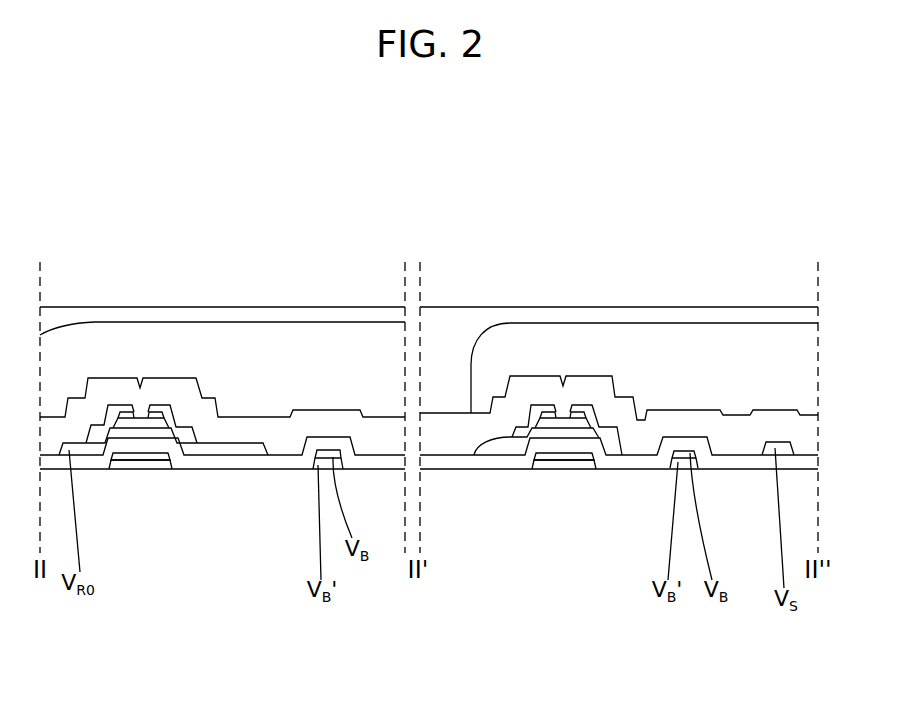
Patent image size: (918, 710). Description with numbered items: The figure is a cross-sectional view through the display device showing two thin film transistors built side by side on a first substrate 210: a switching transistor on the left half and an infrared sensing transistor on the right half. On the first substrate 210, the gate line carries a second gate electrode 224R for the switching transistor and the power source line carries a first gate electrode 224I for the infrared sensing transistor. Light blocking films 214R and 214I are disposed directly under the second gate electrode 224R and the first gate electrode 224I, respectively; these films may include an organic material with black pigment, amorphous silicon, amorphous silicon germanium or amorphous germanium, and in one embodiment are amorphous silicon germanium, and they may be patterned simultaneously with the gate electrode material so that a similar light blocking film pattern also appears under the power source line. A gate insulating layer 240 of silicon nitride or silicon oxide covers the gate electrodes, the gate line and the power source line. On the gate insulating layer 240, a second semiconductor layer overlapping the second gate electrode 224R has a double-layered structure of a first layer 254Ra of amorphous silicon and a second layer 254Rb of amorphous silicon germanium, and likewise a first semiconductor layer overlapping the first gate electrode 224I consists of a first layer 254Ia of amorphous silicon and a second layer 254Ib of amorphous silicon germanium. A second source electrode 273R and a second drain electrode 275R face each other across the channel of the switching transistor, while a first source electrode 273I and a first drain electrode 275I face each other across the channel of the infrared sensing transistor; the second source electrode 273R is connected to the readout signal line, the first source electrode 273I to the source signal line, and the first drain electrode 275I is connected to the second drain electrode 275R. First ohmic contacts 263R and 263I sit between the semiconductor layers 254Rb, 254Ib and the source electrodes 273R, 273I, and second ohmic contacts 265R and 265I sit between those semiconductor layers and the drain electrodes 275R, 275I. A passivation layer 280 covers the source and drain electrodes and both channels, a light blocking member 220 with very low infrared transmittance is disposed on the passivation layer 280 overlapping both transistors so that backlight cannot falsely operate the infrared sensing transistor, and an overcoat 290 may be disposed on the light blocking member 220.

The first substrate 210 is at (748, 488).
The light blocking film 214R is at (135, 463).
The second gate electrode 224R is at (150, 455).
The light blocking film 214I is at (548, 463).
The first gate electrode 224I is at (580, 453).
The gate insulating layer 240 is at (453, 460).
The first layer of second semiconductor layer 254Ra is at (117, 450).
The second layer of second semiconductor layer 254Rb is at (163, 452).
The first layer of first semiconductor layer 254Ia is at (474, 440).
The second layer of first semiconductor layer 254Ib is at (560, 425).
The first ohmic contact 263R is at (130, 405).
The second ohmic contact 265R is at (148, 405).
The first ohmic contact 263I is at (551, 405).
The second ohmic contact 265I is at (573, 405).
The second source electrode 273R is at (112, 403).
The second drain electrode 275R is at (167, 405).
The first source electrode 273I is at (538, 402).
The first drain electrode 275I is at (588, 405).
The passivation layer 280 is at (448, 432).
The overcoat 290 is at (667, 318).
The light blocking member 220 is at (731, 338).